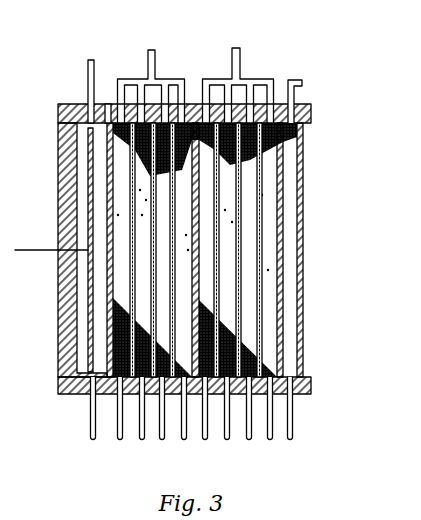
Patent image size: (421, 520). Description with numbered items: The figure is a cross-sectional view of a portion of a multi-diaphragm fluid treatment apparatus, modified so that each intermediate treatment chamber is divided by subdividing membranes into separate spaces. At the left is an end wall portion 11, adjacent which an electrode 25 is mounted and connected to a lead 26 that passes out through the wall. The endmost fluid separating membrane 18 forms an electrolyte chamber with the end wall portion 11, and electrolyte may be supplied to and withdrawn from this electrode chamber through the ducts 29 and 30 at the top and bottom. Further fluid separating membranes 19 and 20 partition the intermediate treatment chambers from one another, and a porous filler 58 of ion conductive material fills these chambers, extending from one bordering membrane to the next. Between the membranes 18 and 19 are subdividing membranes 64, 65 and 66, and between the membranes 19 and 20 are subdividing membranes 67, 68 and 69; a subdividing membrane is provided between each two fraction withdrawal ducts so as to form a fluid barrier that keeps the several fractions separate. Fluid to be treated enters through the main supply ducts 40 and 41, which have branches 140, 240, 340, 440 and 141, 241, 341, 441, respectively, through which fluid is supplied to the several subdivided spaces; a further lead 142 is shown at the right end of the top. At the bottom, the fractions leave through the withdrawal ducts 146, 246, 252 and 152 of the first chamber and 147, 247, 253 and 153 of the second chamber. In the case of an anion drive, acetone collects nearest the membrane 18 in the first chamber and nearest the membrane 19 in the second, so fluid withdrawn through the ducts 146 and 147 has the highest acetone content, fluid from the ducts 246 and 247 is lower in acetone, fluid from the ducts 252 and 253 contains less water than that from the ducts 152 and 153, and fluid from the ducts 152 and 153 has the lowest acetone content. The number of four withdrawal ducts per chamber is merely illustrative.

The end wall portion 11 is at (62, 364).
The fluid separating membrane 18 is at (113, 258).
The fluid separating membrane 19 is at (196, 258).
The fluid separating membrane 20 is at (282, 250).
The electrode 25 is at (88, 286).
The lead 26 is at (17, 262).
The duct 29 is at (88, 71).
The duct 30 is at (91, 420).
The main supply duct 40 is at (151, 49).
The main supply duct 41 is at (237, 47).
The porous filler 58 is at (283, 152).
The subdividing membrane 64 is at (134, 293).
The subdividing membrane 65 is at (155, 295).
The subdividing membrane 66 is at (174, 295).
The subdividing membrane 67 is at (218, 296).
The subdividing membrane 68 is at (240, 296).
The subdividing membrane 69 is at (261, 296).
The branch 140 is at (117, 98).
The branch 240 is at (140, 95).
The branch 340 is at (166, 92).
The branch 440 is at (183, 98).
The branch 141 is at (206, 97).
The branch 241 is at (228, 95).
The branch 341 is at (250, 92).
The branch 441 is at (270, 92).
The lead 142 is at (296, 86).
The withdrawal duct 146 is at (119, 438).
The withdrawal duct 246 is at (143, 439).
The withdrawal duct 252 is at (161, 440).
The withdrawal duct 152 is at (185, 440).
The withdrawal duct 147 is at (207, 440).
The withdrawal duct 247 is at (229, 440).
The withdrawal duct 253 is at (271, 440).
The withdrawal duct 153 is at (291, 440).